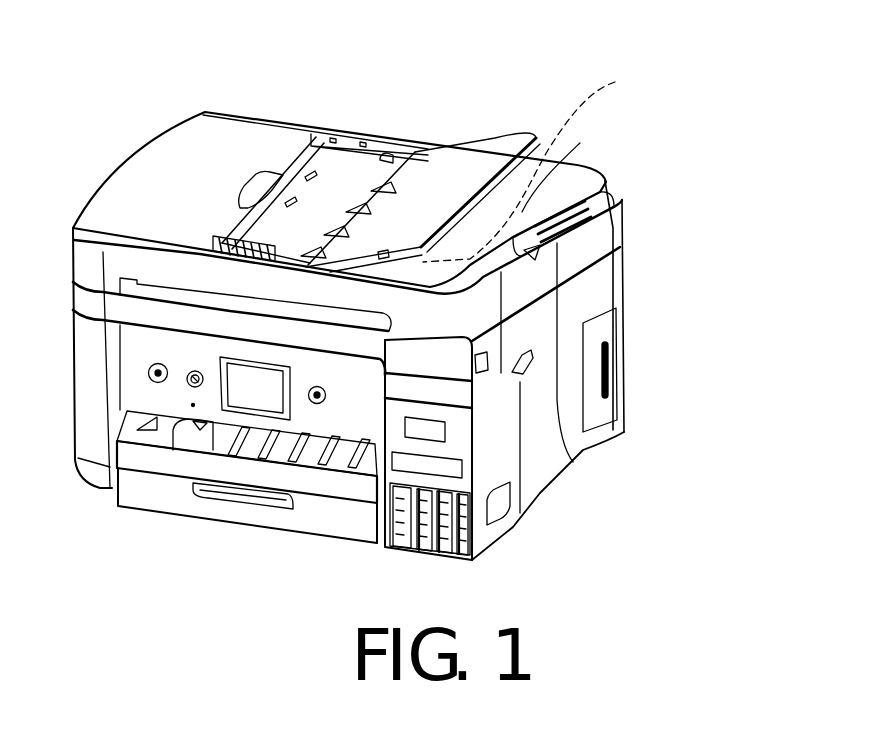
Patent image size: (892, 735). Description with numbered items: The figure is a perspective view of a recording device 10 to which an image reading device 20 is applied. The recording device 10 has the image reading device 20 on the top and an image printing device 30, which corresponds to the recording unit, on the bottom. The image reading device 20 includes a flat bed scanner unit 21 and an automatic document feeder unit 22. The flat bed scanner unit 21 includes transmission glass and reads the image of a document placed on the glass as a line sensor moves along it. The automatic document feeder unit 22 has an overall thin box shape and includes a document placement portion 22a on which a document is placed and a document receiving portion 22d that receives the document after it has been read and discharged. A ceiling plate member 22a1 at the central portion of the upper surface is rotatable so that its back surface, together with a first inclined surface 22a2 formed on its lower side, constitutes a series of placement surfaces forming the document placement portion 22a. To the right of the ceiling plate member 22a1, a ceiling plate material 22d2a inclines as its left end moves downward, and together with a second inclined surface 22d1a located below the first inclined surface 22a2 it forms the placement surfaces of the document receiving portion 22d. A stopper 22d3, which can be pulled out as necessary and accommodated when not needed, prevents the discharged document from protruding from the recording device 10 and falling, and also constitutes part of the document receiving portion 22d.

The recording device 10 is at (753, 172).
The image reading device 20 is at (702, 147).
The flat bed scanner unit 21 is at (597, 257).
The automatic document feeder unit 22 is at (592, 167).
The document placement portion 22a is at (510, 49).
The ceiling plate member 22a1 is at (445, 180).
The first inclined surface 22a2 is at (343, 187).
The document receiving portion 22d is at (708, 62).
The second inclined surface 22d1a is at (615, 82).
The ceiling plate material 22d2a is at (580, 143).
The stopper 22d3 is at (574, 462).
The image printing device 30 is at (668, 273).